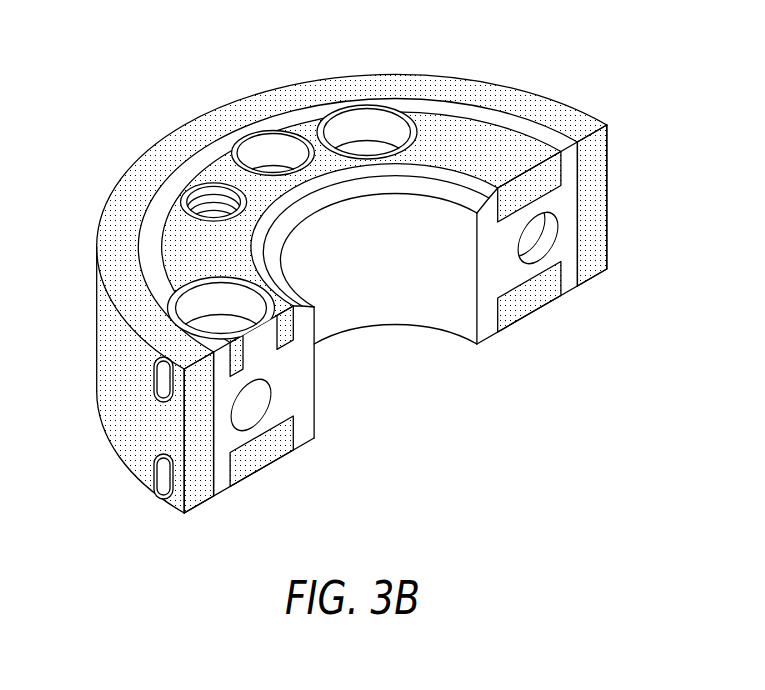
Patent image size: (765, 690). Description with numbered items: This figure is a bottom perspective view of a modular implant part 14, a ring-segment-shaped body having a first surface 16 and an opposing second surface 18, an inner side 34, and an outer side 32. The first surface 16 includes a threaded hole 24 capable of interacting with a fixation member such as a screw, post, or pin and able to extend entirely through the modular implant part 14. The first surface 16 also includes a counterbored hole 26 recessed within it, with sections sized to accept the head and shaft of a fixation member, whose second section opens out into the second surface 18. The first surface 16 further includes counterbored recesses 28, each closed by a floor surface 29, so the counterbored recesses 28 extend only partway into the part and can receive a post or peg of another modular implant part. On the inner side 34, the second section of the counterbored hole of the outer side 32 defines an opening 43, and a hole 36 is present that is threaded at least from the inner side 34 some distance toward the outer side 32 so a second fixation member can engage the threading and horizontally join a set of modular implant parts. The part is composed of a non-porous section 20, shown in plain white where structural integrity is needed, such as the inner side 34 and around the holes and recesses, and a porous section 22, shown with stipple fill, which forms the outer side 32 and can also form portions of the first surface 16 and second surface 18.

The modular implant part 14 is at (546, 35).
The first surface 16 is at (503, 150).
The second surface 18 is at (540, 311).
The non-porous section 20 is at (567, 203).
The porous section 22 is at (132, 200).
The threaded hole 24 is at (203, 197).
The counterbored hole 26 is at (260, 150).
The counterbored recesses 28 is at (358, 118).
The floor surface 29 is at (377, 143).
The outer side 32 is at (108, 357).
The inner side 34 is at (412, 300).
The hole 36 is at (537, 238).
The opening 43 is at (254, 410).